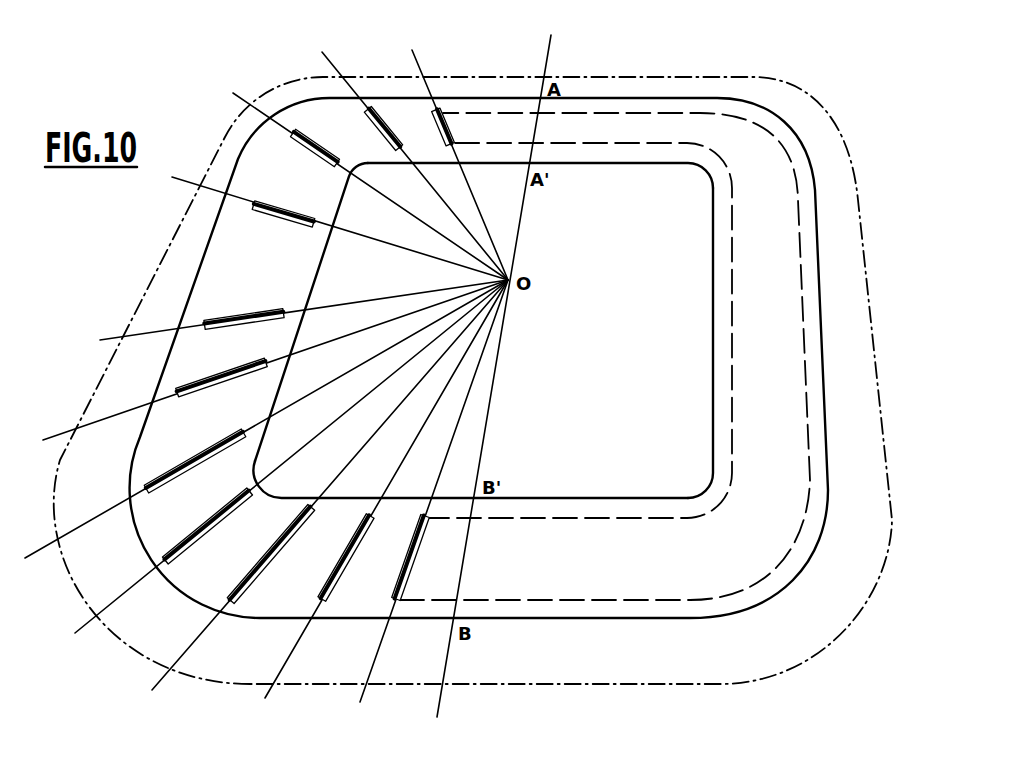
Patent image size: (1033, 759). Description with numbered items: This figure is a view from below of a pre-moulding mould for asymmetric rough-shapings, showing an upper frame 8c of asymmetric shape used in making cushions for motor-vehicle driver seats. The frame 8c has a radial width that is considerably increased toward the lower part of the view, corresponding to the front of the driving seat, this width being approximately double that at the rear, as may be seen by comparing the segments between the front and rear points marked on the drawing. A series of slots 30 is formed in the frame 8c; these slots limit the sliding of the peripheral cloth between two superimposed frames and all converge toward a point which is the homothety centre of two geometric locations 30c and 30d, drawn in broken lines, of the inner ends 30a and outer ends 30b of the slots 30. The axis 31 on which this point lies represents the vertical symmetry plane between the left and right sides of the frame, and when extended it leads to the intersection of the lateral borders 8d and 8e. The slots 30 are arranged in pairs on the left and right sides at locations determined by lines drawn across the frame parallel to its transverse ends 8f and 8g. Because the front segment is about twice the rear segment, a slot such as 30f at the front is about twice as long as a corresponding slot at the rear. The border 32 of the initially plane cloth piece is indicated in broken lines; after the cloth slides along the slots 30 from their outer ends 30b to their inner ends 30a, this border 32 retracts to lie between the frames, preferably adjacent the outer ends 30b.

The slots 30 is at (375, 133).
The inner end of slot 30a is at (432, 112).
The outer end of slot 30b is at (379, 110).
The geometric location of inner slot ends 30c is at (457, 122).
The geometric location of outer slot ends 30d is at (690, 113).
The slot near the front 30f is at (350, 565).
The axis 31 is at (551, 57).
The border of the starting cloth piece 32 is at (165, 250).
The upper frame 8c is at (770, 325).
The lateral border 8d is at (318, 270).
The lateral border 8e is at (712, 272).
The transverse end 8f is at (593, 163).
The transverse end 8g is at (603, 498).